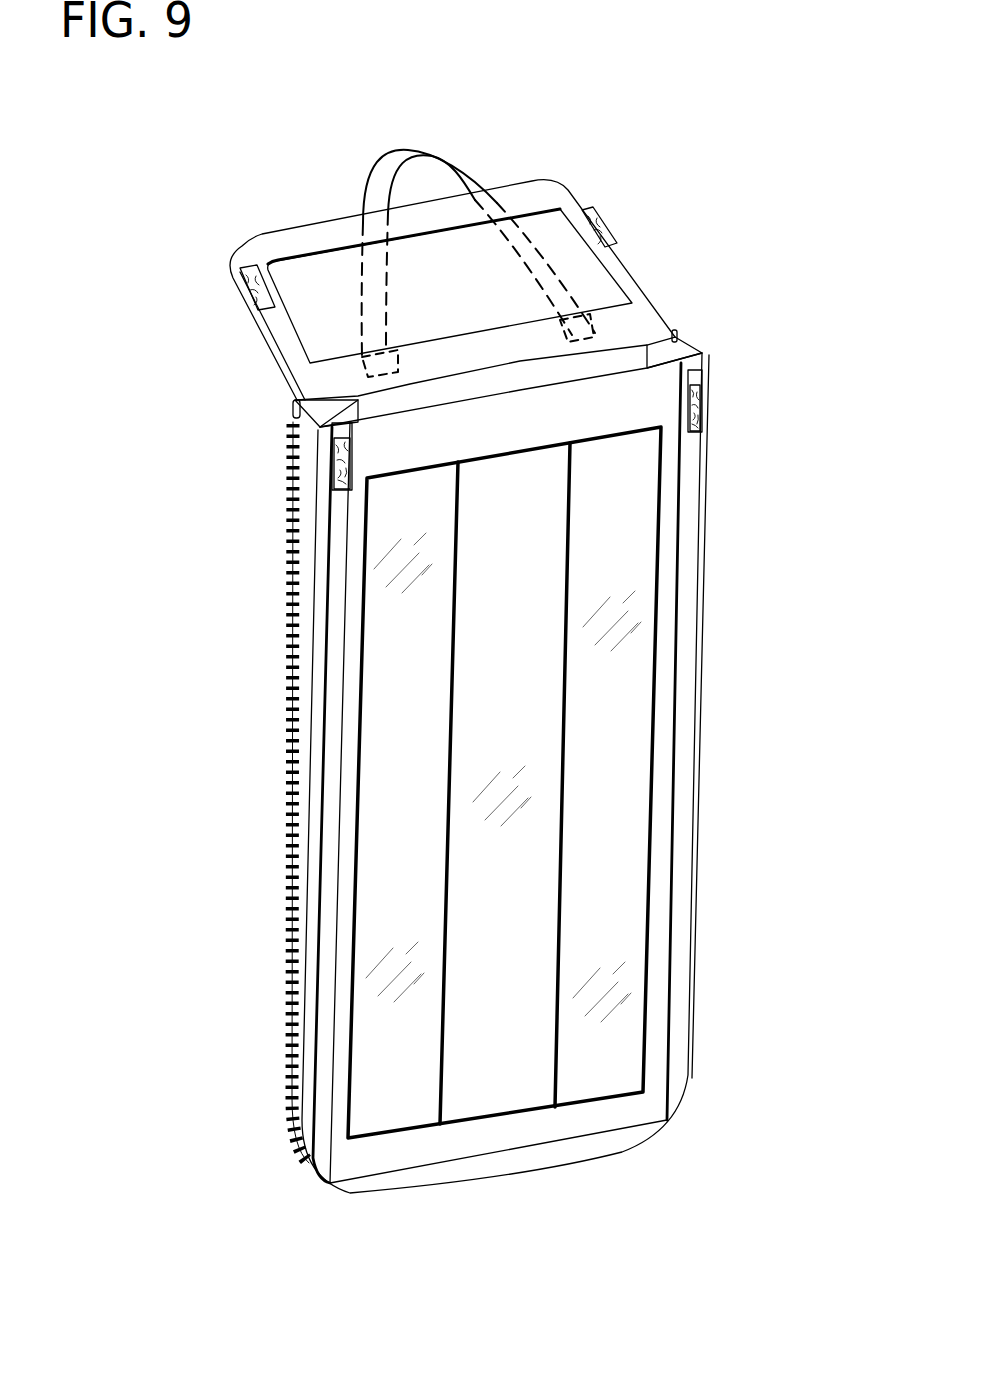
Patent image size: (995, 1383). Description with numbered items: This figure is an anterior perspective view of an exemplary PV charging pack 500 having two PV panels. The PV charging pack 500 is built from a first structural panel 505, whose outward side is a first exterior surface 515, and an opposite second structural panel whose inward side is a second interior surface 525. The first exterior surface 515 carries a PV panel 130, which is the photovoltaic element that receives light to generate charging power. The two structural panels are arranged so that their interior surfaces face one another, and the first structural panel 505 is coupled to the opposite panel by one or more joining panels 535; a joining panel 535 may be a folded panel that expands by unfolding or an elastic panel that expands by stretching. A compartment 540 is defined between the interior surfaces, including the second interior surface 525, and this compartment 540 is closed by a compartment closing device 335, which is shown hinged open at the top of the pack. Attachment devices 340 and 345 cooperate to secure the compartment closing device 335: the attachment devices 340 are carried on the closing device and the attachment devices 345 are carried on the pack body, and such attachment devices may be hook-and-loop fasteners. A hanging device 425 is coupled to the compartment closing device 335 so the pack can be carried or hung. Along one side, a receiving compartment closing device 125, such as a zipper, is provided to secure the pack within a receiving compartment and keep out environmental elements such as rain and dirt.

The PV charging pack 500 is at (267, 1199).
The first structural panel 505 is at (712, 517).
The first exterior surface 515 is at (665, 585).
The PV panel 130 is at (620, 1052).
The receiving compartment closing device 125 is at (283, 1057).
The second interior surface 525 is at (466, 387).
The compartment 540 is at (639, 331).
The joining panel 535 is at (320, 411).
The attachment device 345 is at (333, 468).
The compartment closing device 335 is at (298, 218).
The attachment device 340 is at (243, 272).
The hanging device 425 is at (428, 152).